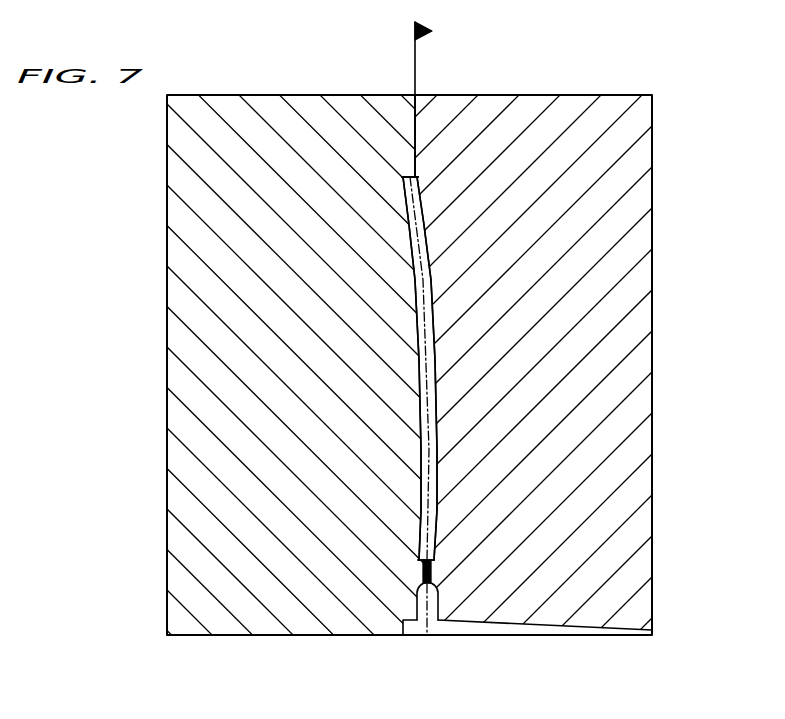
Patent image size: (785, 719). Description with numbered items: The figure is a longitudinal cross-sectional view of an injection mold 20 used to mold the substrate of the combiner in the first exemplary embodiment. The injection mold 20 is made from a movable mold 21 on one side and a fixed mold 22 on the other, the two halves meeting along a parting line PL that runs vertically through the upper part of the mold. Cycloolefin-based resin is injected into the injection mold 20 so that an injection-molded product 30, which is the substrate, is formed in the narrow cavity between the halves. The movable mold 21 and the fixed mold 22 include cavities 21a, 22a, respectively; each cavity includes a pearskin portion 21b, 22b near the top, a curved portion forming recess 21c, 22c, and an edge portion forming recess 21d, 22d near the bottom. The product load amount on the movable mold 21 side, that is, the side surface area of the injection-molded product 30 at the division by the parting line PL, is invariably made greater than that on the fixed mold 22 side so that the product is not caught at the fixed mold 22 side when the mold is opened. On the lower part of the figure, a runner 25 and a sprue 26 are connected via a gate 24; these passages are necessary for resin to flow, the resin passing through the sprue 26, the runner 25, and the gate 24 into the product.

The injection mold 20 is at (238, 72).
The movable mold 21 is at (160, 211).
The fixed mold 22 is at (656, 316).
The parting line PL is at (433, 31).
The injection-molded product 30 is at (415, 340).
The cavity 21a is at (420, 418).
The cavity 22a is at (437, 440).
The pearskin portion 21b is at (412, 177).
The pearskin portion 22b is at (418, 177).
The curved portion forming recess 21c is at (403, 177).
The curved portion forming recess 22c is at (418, 177).
The edge portion forming recess 21d is at (419, 558).
The edge portion forming recess 22d is at (434, 556).
The gate 24 is at (432, 573).
The runner 25 is at (419, 600).
The sprue 26 is at (528, 630).